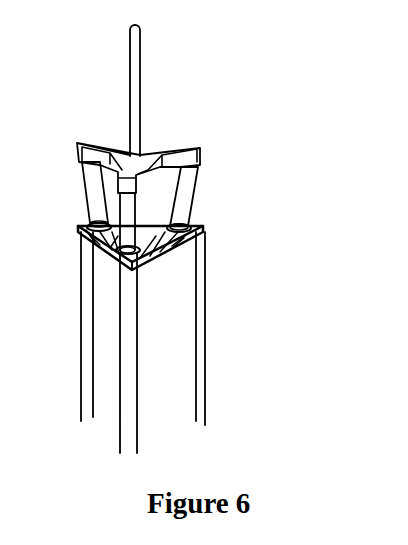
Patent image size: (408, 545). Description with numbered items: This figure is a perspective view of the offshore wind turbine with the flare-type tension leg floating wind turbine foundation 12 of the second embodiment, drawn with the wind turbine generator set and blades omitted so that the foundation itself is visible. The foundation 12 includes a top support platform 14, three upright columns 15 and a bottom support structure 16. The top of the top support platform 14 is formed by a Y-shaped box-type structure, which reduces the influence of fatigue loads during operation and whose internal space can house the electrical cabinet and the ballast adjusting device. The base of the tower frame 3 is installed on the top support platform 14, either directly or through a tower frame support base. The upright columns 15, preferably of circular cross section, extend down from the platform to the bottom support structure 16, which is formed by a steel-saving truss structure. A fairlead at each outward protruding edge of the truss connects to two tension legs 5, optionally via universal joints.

The tower frame 3 is at (133, 78).
The flare-type tension leg floating wind turbine foundation 12 is at (147, 203).
The top support platform 14 is at (201, 153).
The upright columns 15 is at (198, 190).
The bottom support structure 16 is at (200, 235).
The tension legs 5 is at (205, 302).